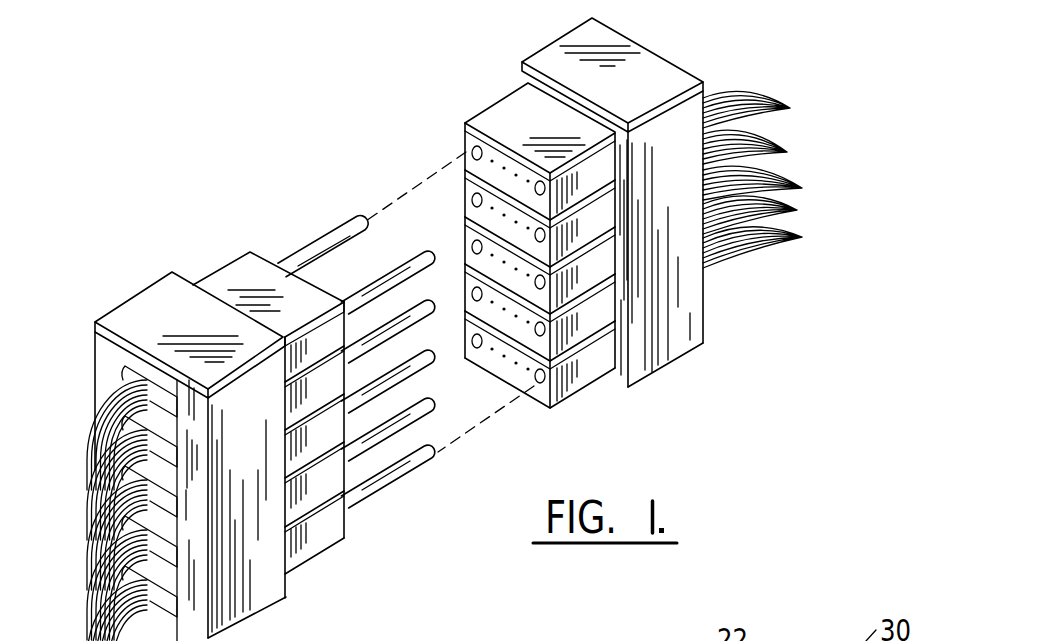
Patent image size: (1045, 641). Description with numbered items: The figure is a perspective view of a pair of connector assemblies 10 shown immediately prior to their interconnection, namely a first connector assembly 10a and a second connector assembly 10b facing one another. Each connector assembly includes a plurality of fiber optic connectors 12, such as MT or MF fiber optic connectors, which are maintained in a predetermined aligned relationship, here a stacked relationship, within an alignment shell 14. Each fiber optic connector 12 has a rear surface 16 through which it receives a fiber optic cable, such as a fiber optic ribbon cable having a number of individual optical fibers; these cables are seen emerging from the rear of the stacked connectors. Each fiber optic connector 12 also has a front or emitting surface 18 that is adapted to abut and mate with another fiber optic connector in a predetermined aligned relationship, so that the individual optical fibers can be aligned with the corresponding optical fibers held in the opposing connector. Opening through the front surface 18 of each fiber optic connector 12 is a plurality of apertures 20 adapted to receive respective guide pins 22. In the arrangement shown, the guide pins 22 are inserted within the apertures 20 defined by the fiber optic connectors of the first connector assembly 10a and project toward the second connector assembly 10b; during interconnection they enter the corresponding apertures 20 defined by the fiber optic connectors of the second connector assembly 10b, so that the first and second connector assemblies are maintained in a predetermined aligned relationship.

The connector assembly 10 is at (713, 62).
The first connector assembly 10a is at (323, 559).
The second connector assembly 10b is at (592, 398).
The fiber optic connector 12 is at (413, 302).
The alignment shell 14 is at (185, 316).
The rear surface 16 is at (178, 432).
The front surface 18 is at (515, 235).
The apertures 20 is at (475, 150).
The guide pins 22 is at (345, 222).